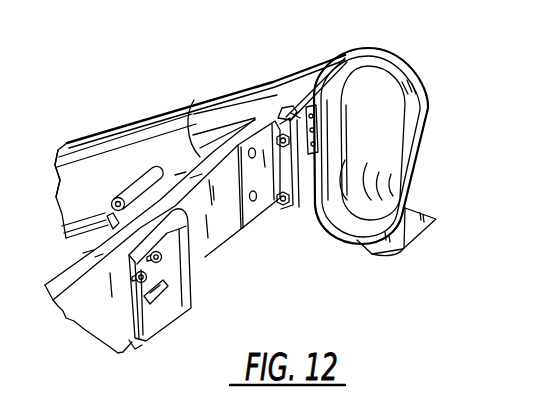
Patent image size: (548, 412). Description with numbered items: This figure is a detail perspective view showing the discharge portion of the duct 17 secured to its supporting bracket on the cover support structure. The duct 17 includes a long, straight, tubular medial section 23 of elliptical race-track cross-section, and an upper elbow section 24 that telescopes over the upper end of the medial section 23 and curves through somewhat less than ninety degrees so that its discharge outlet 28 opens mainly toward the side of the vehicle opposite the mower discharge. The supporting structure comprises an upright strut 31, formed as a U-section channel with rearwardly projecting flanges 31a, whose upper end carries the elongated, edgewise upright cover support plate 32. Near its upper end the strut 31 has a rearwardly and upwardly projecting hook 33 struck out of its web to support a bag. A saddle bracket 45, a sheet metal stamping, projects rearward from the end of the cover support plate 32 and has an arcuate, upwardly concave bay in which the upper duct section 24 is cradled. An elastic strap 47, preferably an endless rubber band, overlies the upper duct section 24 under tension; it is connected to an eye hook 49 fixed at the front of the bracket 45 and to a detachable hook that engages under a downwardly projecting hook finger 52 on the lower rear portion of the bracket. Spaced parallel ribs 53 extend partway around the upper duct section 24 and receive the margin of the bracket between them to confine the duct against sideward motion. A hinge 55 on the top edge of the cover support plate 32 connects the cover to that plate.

The duct 17 is at (140, 118).
The medial section 23 is at (69, 143).
The upper elbow section 24 is at (321, 66).
The discharge outlet 28 is at (360, 217).
The upright strut 31 is at (158, 324).
The rearwardly projecting flange 31a is at (131, 348).
The cover support plate 32 is at (212, 242).
The hook 33 is at (168, 294).
The saddle bracket 45 is at (283, 212).
The elastic strap 47 is at (423, 82).
The eye hook 49 is at (277, 120).
The hook finger 52 is at (407, 250).
The rib 53 is at (373, 246).
The hinge 55 is at (128, 191).